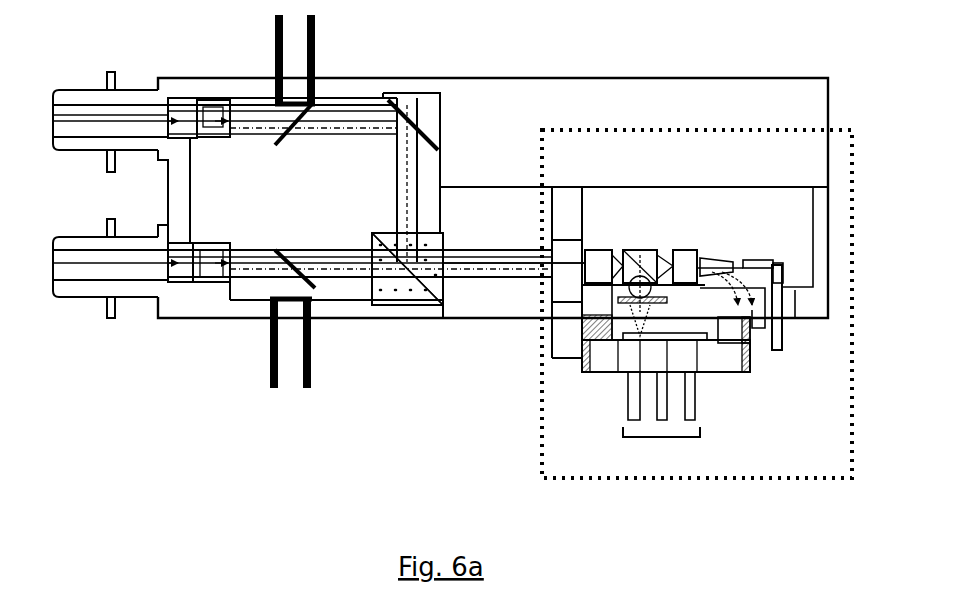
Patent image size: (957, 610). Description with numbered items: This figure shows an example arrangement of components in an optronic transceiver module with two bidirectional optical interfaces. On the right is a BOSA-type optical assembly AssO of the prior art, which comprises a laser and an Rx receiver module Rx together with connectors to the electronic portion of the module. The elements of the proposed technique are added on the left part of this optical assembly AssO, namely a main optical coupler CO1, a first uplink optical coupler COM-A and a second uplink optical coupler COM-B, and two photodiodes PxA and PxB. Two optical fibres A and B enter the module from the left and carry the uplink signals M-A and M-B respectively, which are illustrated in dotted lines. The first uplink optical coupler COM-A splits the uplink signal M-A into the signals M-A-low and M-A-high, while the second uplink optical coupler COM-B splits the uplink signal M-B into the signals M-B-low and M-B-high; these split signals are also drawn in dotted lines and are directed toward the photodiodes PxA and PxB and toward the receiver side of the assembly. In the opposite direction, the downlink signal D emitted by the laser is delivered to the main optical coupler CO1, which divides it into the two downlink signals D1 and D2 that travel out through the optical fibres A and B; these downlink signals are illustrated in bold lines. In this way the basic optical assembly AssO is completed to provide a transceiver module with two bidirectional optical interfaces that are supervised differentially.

The optical fibre A is at (95, 122).
The optical fibre B is at (96, 268).
The downlink signal D1 is at (60, 117).
The downlink signal D2 is at (60, 262).
The downlink signal from the laser D is at (514, 258).
The uplink signal M-A is at (243, 130).
The split uplink signal M-A-low is at (290, 122).
The split uplink signal M-A-high is at (412, 175).
The uplink signal M-B is at (236, 279).
The split uplink signal M-B-low is at (288, 284).
The split uplink signal M-B-high is at (396, 268).
The photodiode PxA is at (314, 59).
The photodiode PxB is at (305, 343).
The first uplink optical coupler COM-A is at (302, 138).
The second uplink optical coupler COM-B is at (291, 252).
The main optical coupler CO1 is at (436, 232).
The optical assembly AssO is at (709, 295).
The element laser is at (724, 260).
The Rx receiver module Rx is at (651, 312).